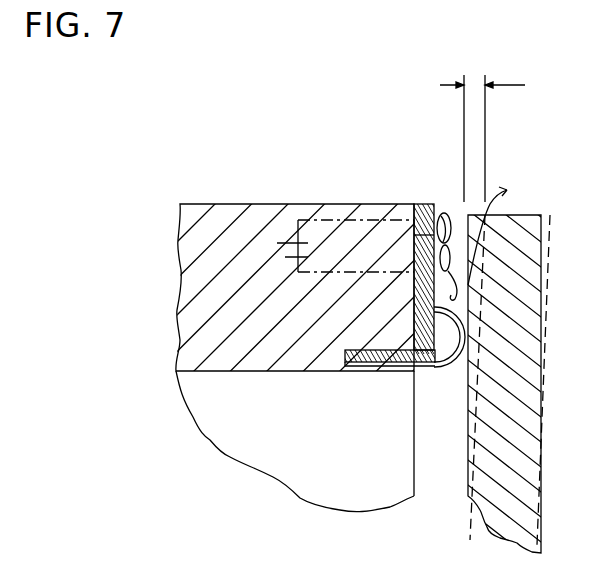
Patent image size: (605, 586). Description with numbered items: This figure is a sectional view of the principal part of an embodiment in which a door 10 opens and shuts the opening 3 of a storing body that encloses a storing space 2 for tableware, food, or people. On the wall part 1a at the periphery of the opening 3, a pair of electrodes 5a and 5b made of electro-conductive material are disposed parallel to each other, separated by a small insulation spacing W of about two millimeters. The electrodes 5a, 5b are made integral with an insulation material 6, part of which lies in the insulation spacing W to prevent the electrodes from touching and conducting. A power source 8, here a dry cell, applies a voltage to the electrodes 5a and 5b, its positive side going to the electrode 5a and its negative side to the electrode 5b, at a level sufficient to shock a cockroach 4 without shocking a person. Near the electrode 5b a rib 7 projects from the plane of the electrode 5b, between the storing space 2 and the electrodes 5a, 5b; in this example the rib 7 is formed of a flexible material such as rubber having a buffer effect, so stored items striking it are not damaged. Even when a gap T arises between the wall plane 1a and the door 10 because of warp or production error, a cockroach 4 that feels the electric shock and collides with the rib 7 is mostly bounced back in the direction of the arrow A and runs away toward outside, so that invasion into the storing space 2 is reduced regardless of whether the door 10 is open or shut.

The wall part 1a is at (310, 371).
The storing space 2 is at (322, 459).
The opening 3 is at (408, 498).
The cockroach 4 is at (442, 214).
The electrode 5a is at (427, 203).
The electrode 5b is at (386, 367).
The insulation material 6 is at (437, 325).
The rib 7 is at (448, 368).
The power source 8 is at (288, 243).
The door 10 is at (525, 470).
The insulation spacing W is at (413, 222).
The arrow A is at (497, 225).
The gap T is at (482, 138).